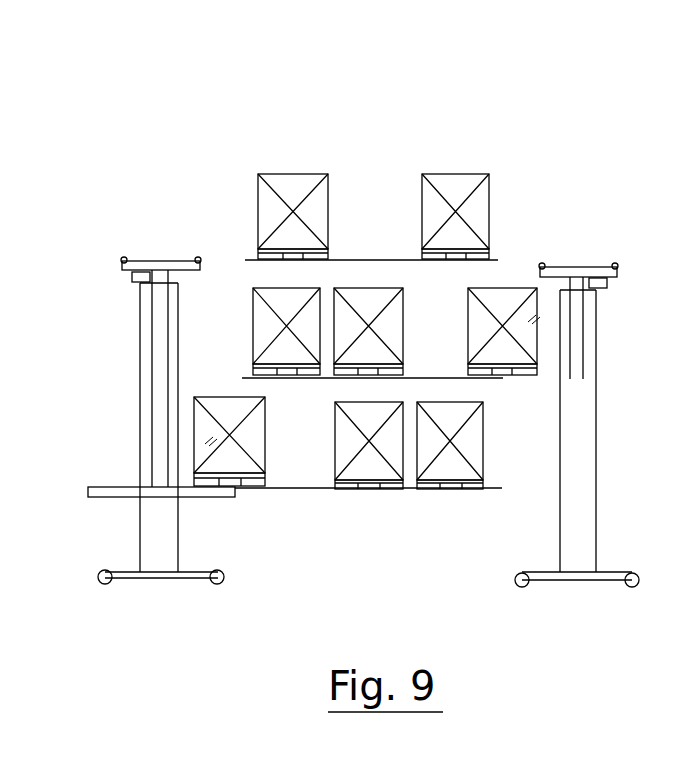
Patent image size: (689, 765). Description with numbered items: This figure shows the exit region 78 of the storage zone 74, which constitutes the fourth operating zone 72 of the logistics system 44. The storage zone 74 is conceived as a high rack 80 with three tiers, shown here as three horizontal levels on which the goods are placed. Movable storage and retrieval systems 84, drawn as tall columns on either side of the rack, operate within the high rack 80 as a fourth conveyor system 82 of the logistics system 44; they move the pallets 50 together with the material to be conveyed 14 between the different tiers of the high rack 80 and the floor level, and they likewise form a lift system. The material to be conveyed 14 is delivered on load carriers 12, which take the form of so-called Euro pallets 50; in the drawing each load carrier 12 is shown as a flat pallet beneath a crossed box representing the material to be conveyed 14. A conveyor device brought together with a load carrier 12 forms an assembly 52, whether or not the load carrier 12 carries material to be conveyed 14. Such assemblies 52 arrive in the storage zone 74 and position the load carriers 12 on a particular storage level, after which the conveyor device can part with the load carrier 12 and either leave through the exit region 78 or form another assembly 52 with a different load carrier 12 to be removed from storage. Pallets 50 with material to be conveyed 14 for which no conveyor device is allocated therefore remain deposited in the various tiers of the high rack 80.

The load carrier 12 is at (413, 251).
The material to be conveyed 14 is at (285, 182).
The logistics system 44 is at (280, 92).
The Euro pallet 50 is at (330, 260).
The assembly 52 is at (210, 440).
The fourth operating zone 72 is at (316, 108).
The storage zone 74 is at (360, 122).
The exit region 78 is at (378, 575).
The high rack 80 is at (555, 150).
The fourth conveyor system 82 is at (107, 222).
The storage and retrieval system 84 is at (150, 368).